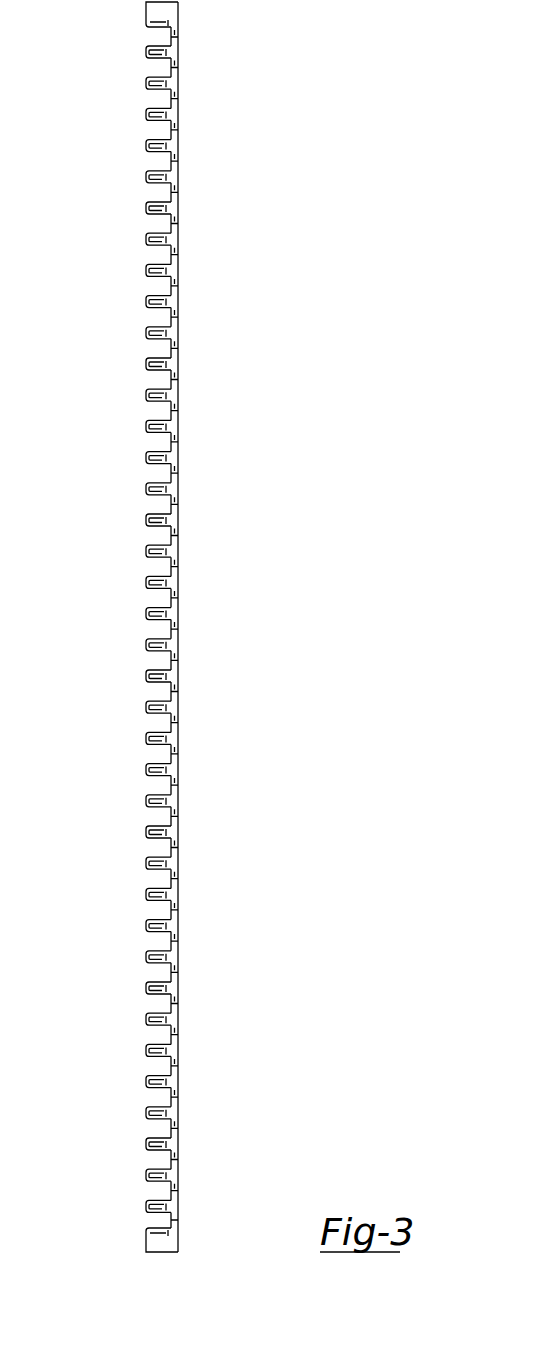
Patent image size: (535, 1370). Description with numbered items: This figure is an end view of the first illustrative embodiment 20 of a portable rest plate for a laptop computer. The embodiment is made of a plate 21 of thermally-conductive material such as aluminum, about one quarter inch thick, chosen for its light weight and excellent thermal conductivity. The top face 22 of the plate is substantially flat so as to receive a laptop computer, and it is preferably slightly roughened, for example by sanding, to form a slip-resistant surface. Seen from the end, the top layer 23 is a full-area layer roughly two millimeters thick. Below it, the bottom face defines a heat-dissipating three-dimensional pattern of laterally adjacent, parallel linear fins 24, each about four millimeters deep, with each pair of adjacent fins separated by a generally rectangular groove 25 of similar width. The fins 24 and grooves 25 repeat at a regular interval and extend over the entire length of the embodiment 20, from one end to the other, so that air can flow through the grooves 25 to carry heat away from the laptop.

The first illustrative embodiment 20 is at (140, 347).
The plate 21 is at (178, 761).
The top face 22 is at (178, 178).
The top layer 23 is at (147, 266).
The fins 24 is at (146, 488).
The groove 25 is at (148, 946).